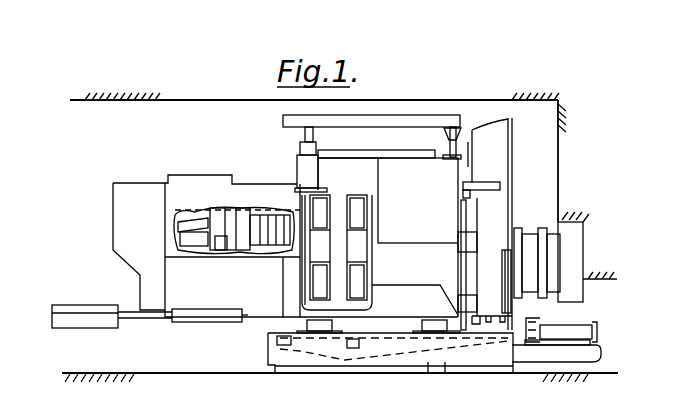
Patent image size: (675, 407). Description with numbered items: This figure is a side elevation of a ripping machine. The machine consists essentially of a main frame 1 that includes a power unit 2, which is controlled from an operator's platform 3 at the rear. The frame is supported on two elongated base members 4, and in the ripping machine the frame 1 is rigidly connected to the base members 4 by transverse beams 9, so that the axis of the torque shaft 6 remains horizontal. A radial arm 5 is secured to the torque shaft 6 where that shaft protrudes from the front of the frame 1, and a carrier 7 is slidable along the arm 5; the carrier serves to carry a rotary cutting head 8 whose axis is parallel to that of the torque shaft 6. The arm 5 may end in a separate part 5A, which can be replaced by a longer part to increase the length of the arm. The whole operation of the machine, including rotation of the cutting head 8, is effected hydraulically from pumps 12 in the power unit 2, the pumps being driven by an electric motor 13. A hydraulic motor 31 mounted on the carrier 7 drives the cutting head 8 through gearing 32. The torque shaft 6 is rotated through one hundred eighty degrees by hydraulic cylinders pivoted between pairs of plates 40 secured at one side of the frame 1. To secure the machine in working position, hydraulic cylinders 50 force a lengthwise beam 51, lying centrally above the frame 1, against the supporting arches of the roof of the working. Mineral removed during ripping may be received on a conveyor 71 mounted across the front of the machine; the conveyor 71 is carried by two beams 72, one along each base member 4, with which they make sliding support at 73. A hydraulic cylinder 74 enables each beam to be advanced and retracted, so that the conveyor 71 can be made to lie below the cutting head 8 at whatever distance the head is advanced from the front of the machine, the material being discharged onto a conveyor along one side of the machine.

The main frame 1 is at (388, 233).
The power unit 2 is at (171, 250).
The operator's platform 3 is at (96, 305).
The base member 4 is at (275, 352).
The radial arm 5 is at (490, 218).
The separate part 5A is at (497, 160).
The torque shaft 6 is at (460, 270).
The carrier 7 is at (508, 298).
The rotary cutting head 8 is at (574, 236).
The transverse beam 9 is at (426, 320).
The pump 12 is at (262, 212).
The electric motor 13 is at (207, 213).
The hydraulic motor 31 is at (528, 253).
The gearing 32 is at (550, 253).
The plates 40 is at (345, 258).
The hydraulic cylinder 50 is at (300, 150).
The lengthwise beam 51 is at (283, 121).
The conveyor 71 is at (574, 323).
The beam 72 is at (356, 357).
The sliding support 73 is at (443, 369).
The hydraulic cylinder 74 is at (268, 337).